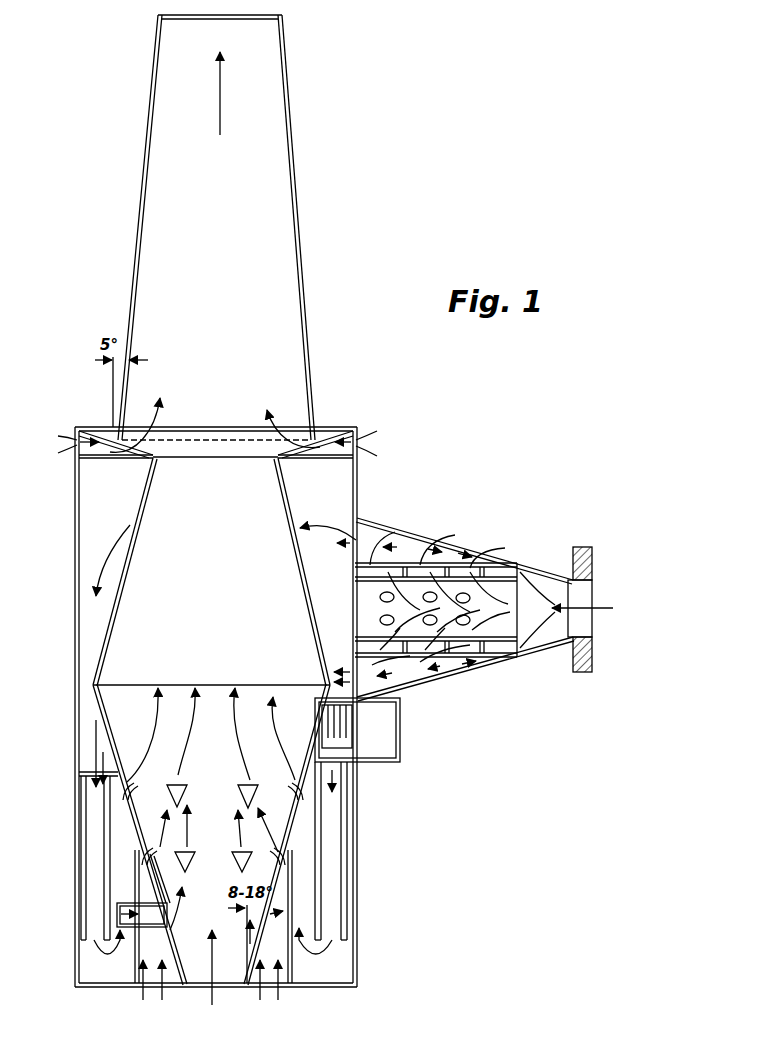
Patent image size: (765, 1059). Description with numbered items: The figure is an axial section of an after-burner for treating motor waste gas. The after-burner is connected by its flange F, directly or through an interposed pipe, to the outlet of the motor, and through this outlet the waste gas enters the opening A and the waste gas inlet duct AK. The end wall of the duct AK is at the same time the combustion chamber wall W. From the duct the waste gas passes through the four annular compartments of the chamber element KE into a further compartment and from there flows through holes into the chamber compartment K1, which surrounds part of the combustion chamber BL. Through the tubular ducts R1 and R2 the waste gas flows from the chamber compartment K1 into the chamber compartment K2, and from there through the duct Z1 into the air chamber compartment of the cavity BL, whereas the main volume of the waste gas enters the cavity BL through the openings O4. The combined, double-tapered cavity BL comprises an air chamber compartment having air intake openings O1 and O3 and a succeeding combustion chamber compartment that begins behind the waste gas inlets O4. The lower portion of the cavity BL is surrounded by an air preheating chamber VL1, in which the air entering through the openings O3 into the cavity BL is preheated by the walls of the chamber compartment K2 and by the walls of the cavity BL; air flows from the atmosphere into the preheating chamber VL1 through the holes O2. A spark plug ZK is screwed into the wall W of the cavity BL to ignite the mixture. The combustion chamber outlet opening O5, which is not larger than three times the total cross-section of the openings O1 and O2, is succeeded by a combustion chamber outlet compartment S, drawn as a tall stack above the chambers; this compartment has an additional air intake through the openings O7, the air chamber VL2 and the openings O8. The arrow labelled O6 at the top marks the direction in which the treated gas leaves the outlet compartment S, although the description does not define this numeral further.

The combustion chamber outlet compartment S is at (218, 270).
The exhaust gas outlet flow O6 is at (260, 15).
The openings O8 is at (307, 447).
The openings O7 is at (405, 462).
The air chamber VL2 is at (99, 458).
The combustion chamber outlet opening O5 is at (222, 459).
The chamber compartment K1 is at (332, 573).
The combustion chamber wall W is at (119, 600).
The chamber element KE is at (422, 543).
The flange F is at (587, 547).
The opening A is at (591, 622).
The waste gas inlet duct AK is at (472, 636).
The combustion chamber / combined cavity BL is at (240, 665).
The spark plug ZK is at (350, 735).
The waste gas inlets / openings O4 is at (130, 787).
The air intake openings O3 is at (192, 858).
The tubular duct R2 is at (96, 867).
The tubular duct R1 is at (334, 886).
The duct Z1 is at (160, 919).
The air preheating chamber VL1 is at (288, 963).
The air intake openings O1 is at (193, 985).
The holes O2 is at (162, 988).
The chamber compartment K2 is at (102, 975).